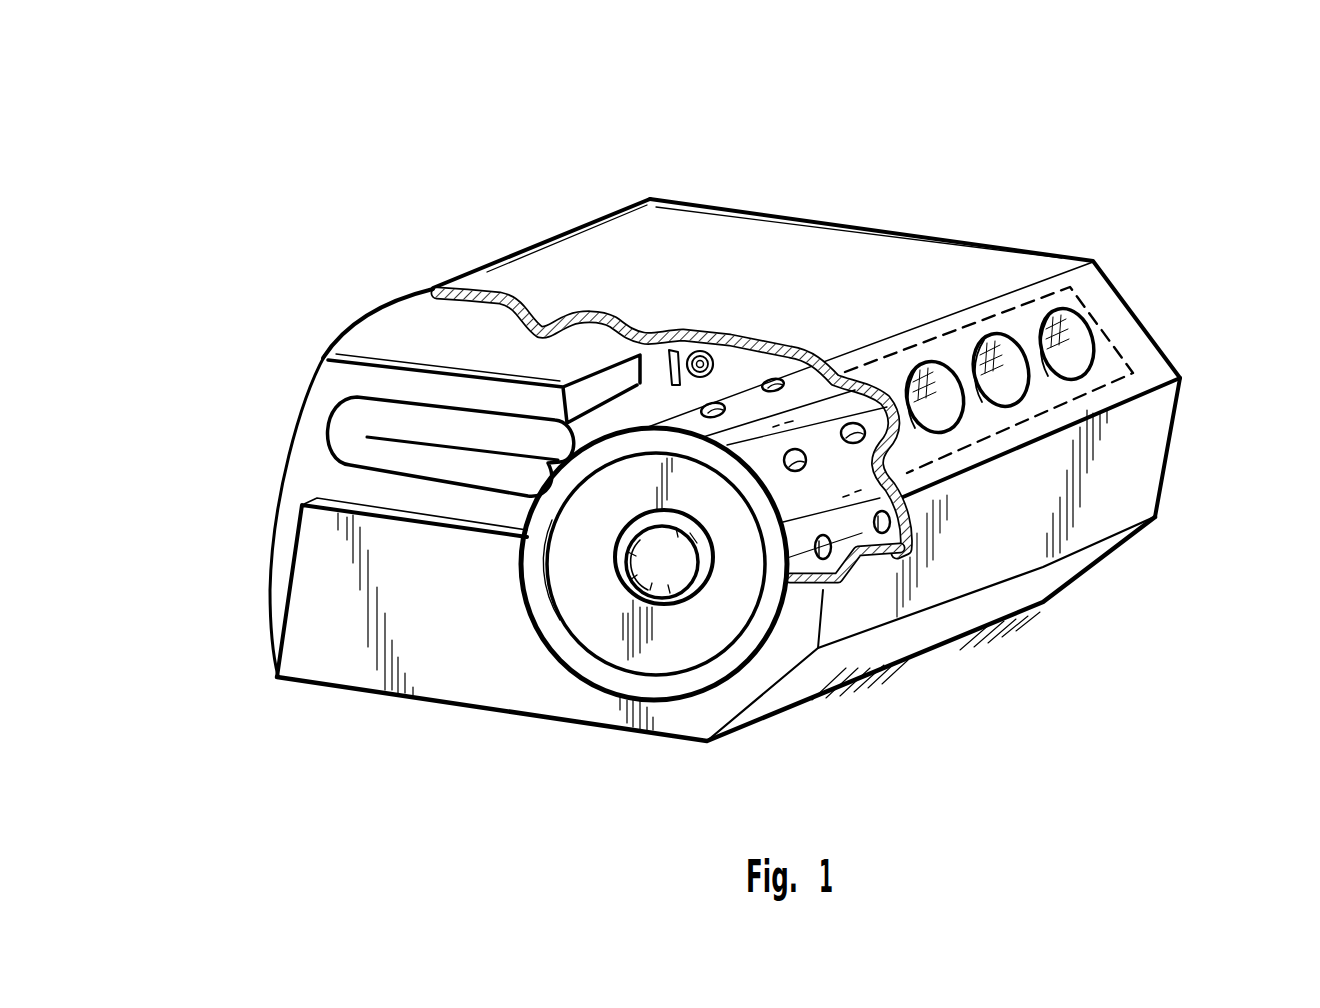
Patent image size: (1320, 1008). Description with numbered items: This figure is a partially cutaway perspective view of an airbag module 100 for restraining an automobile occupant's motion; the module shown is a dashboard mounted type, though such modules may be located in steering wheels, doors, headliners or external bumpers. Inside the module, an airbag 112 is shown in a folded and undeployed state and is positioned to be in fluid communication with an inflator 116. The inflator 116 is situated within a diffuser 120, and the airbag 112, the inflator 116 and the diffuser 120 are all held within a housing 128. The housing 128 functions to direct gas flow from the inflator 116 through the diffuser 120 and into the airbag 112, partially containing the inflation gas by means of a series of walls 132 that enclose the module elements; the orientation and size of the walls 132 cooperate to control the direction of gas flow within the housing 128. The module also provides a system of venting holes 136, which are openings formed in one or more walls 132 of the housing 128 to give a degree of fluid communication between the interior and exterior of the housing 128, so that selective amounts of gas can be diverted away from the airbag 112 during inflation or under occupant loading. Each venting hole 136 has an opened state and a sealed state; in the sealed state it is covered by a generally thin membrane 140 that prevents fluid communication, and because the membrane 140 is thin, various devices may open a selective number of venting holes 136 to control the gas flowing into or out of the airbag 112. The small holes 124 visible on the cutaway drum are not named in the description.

The airbag module 100 is at (1128, 214).
The airbag 112 is at (343, 427).
The inflator 116 is at (657, 568).
The diffuser 120 is at (552, 628).
The drum holes 124 is at (830, 551).
The housing 128 is at (582, 245).
The walls 132 is at (305, 622).
The venting holes 136 is at (1054, 310).
The thin membrane 140 is at (1088, 391).